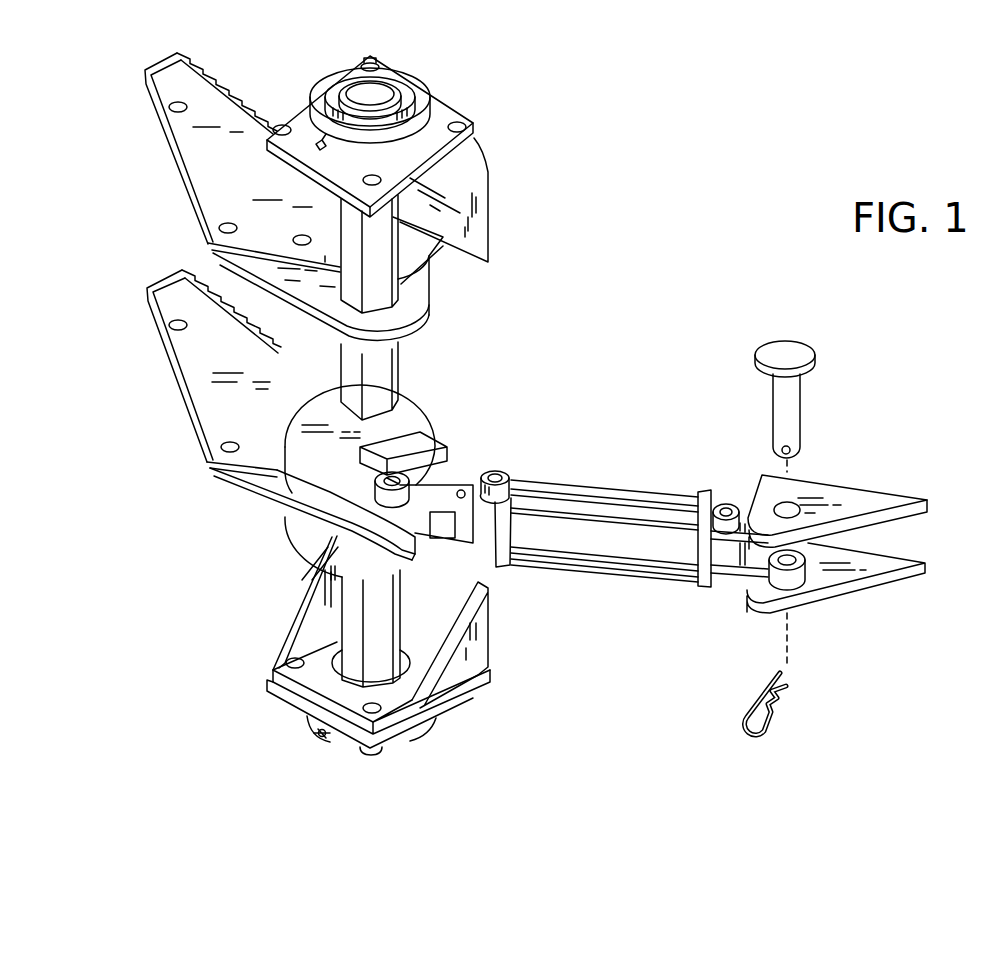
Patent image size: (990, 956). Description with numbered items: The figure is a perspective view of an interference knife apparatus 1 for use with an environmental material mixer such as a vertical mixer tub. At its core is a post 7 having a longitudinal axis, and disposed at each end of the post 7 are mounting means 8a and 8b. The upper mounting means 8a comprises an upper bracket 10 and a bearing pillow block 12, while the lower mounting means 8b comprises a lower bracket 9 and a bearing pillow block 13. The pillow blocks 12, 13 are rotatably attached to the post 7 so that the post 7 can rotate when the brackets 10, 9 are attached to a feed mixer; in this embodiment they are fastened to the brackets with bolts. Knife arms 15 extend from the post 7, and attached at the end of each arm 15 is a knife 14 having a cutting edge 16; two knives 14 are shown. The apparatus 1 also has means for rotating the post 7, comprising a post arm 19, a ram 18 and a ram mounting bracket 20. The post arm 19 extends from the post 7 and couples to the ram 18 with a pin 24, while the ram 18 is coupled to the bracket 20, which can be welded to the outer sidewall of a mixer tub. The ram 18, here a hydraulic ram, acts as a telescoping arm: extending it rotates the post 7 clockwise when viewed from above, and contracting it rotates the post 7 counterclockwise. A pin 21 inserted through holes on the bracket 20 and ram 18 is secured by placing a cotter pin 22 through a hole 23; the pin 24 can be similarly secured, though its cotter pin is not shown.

The interference knife apparatus 1 is at (682, 232).
The post 7 is at (390, 372).
The mounting means 8a is at (508, 104).
The mounting means 8b is at (514, 739).
The lower bracket 9 is at (480, 645).
The upper bracket 10 is at (494, 210).
The bearing pillow block 12 is at (440, 83).
The bearing pillow block 13 is at (410, 736).
The knife 14 is at (203, 157).
The knife arm 15 is at (283, 292).
The cutting edge 16 is at (205, 58).
The ram 18 is at (540, 502).
The post arm 19 is at (330, 484).
The ram mounting bracket 20 is at (862, 500).
The pin 21 is at (790, 353).
The cotter pin 22 is at (770, 734).
The hole 23 is at (801, 448).
The pin 24 is at (445, 440).